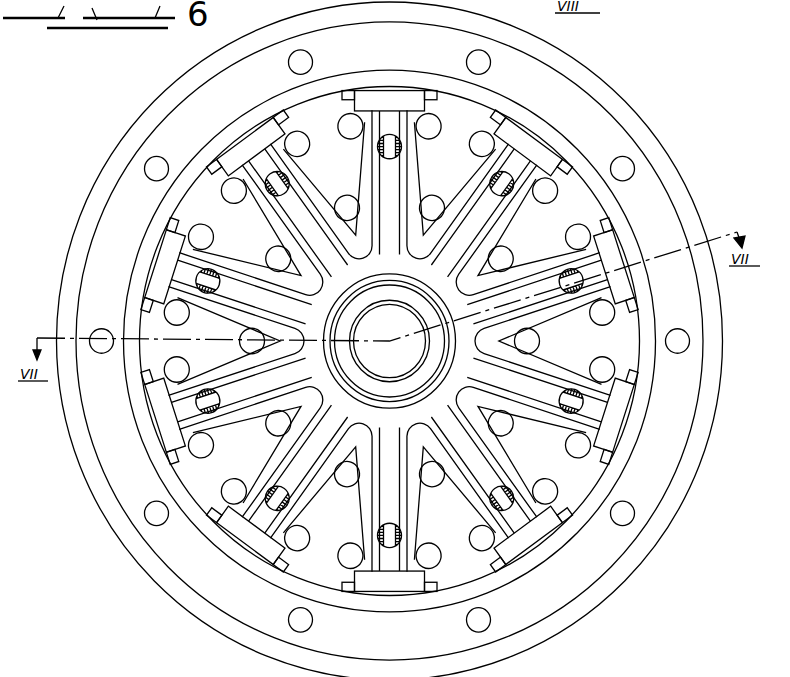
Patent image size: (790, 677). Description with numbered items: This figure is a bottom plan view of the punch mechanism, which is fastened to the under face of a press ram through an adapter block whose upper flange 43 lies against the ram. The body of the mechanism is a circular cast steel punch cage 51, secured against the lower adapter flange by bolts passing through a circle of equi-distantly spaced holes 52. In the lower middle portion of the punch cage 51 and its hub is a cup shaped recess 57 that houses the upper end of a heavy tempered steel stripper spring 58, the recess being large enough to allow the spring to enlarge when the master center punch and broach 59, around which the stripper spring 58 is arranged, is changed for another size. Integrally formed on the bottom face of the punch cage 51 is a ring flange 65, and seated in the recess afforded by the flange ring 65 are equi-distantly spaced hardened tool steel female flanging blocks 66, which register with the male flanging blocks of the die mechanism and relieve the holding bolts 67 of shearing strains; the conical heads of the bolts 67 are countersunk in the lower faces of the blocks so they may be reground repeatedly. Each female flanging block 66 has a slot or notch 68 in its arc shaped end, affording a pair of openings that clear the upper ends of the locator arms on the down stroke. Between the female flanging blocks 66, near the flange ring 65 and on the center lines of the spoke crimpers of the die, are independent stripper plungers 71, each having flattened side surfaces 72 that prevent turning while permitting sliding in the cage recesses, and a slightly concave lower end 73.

The upper flange 43 is at (72, 270).
The punch cage 51 is at (100, 215).
The holes 52 is at (160, 160).
The cup shaped recess 57 is at (333, 312).
The stripper spring 58 is at (420, 258).
The master center punch and broach 59 is at (390, 340).
The ring flange 65 is at (166, 473).
The female flanging blocks 66 is at (389, 341).
The holding bolts 67 is at (253, 233).
The slot or notch 68 is at (432, 92).
The stripper plunger 71 is at (268, 487).
The flattened side surfaces 72 is at (220, 356).
The concave lower end 73 is at (389, 518).